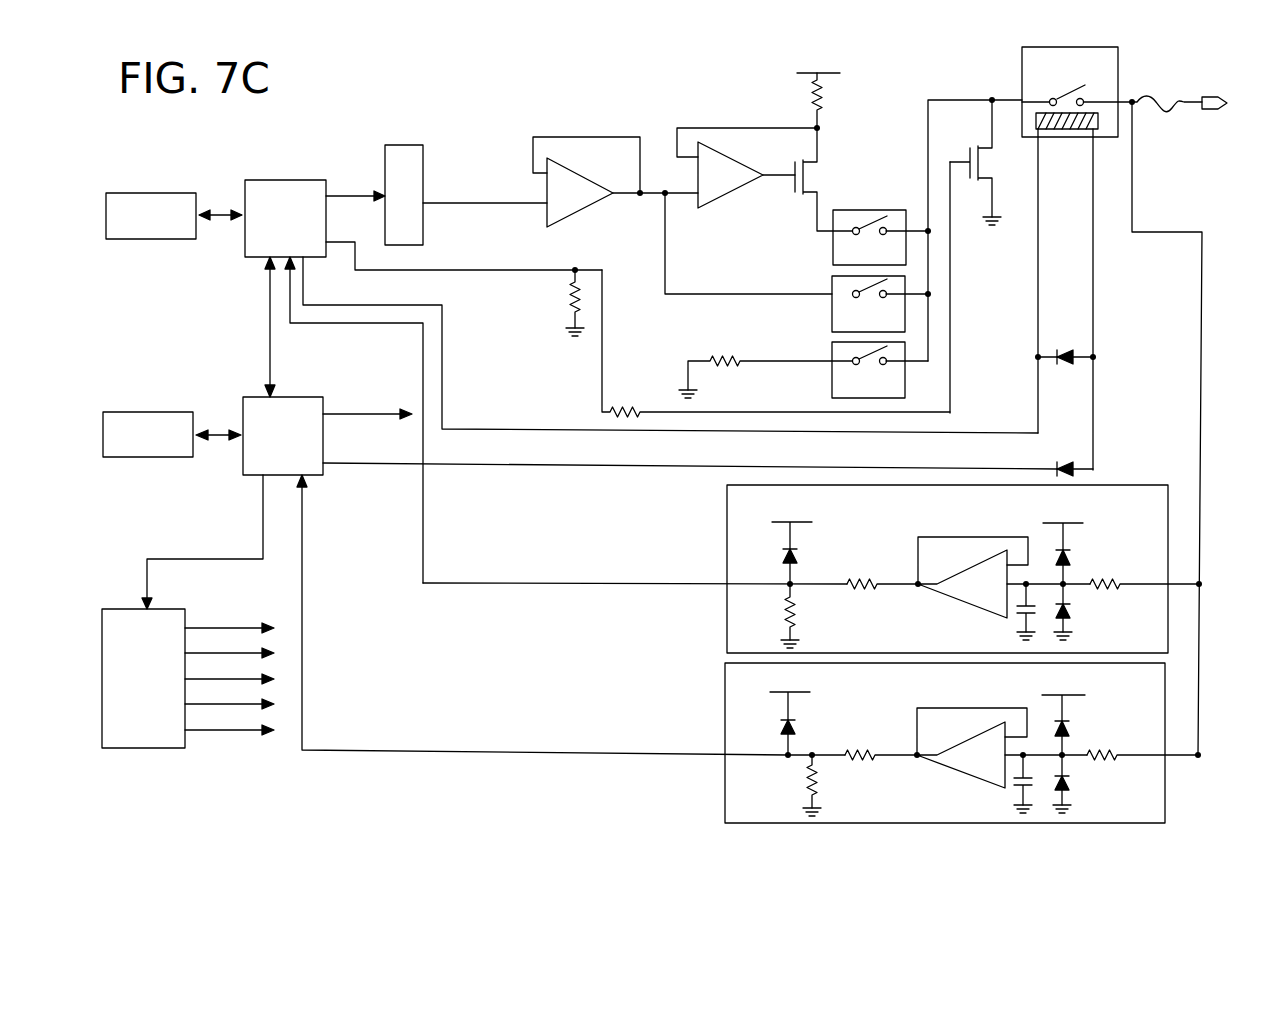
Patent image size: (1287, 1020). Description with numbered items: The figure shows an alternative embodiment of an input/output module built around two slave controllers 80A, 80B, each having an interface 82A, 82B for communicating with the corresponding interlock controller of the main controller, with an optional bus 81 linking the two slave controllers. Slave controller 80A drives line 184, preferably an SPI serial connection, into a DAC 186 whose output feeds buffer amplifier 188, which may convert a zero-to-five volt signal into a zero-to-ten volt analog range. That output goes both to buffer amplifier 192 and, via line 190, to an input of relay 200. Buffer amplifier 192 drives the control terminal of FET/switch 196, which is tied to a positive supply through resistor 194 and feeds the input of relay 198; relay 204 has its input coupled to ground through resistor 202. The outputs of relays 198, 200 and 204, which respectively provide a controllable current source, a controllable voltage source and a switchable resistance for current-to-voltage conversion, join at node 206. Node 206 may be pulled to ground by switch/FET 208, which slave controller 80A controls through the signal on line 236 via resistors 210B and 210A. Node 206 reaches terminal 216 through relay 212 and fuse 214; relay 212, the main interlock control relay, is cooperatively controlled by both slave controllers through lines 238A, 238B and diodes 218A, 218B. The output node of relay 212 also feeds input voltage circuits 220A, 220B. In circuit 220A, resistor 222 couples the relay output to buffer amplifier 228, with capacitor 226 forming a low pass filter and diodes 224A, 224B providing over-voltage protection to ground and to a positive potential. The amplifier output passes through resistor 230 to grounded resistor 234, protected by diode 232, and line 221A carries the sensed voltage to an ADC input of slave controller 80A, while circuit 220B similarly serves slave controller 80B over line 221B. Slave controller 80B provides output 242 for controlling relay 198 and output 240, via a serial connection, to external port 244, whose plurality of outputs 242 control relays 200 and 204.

The slave controller 80A is at (302, 179).
The slave controller 80B is at (240, 415).
The bus 81 is at (268, 350).
The interface 82A is at (150, 241).
The interface 82B is at (147, 459).
The line 184 is at (353, 192).
The DAC 186 is at (405, 144).
The buffer amplifier 188 is at (567, 216).
The line 190 is at (666, 249).
The buffer amplifier 192 is at (730, 196).
The resistor 194 is at (812, 92).
The FET/switch 196 is at (813, 168).
The relay 198 is at (833, 252).
The relay 200 is at (826, 317).
The resistor 202 is at (727, 357).
The relay 204 is at (826, 384).
The node 206 is at (992, 99).
The switch/FET 208 is at (968, 148).
The resistor 210A is at (638, 408).
The resistor 210B is at (572, 298).
The relay 212 is at (1070, 140).
The fuse 214 is at (1158, 100).
The terminal 216 is at (1209, 97).
The diode 218A is at (1065, 461).
The diode 218B is at (1065, 349).
The input voltage circuit 220A is at (726, 504).
The input voltage circuit 220B is at (725, 684).
The line 221A is at (492, 580).
The line 221B is at (492, 750).
The resistor 222 is at (1107, 583).
The diode 224A is at (1072, 612).
The diode 224B is at (1071, 555).
The capacitor 226 is at (1016, 615).
The buffer amplifier 228 is at (961, 598).
The resistor 230 is at (852, 578).
The diode 232 is at (799, 551).
The resistor 234 is at (801, 610).
The line 236 is at (460, 270).
The line 238A is at (443, 361).
The line 238B is at (370, 467).
The output 240 is at (233, 557).
The output 242 is at (348, 410).
The external port 244 is at (146, 750).